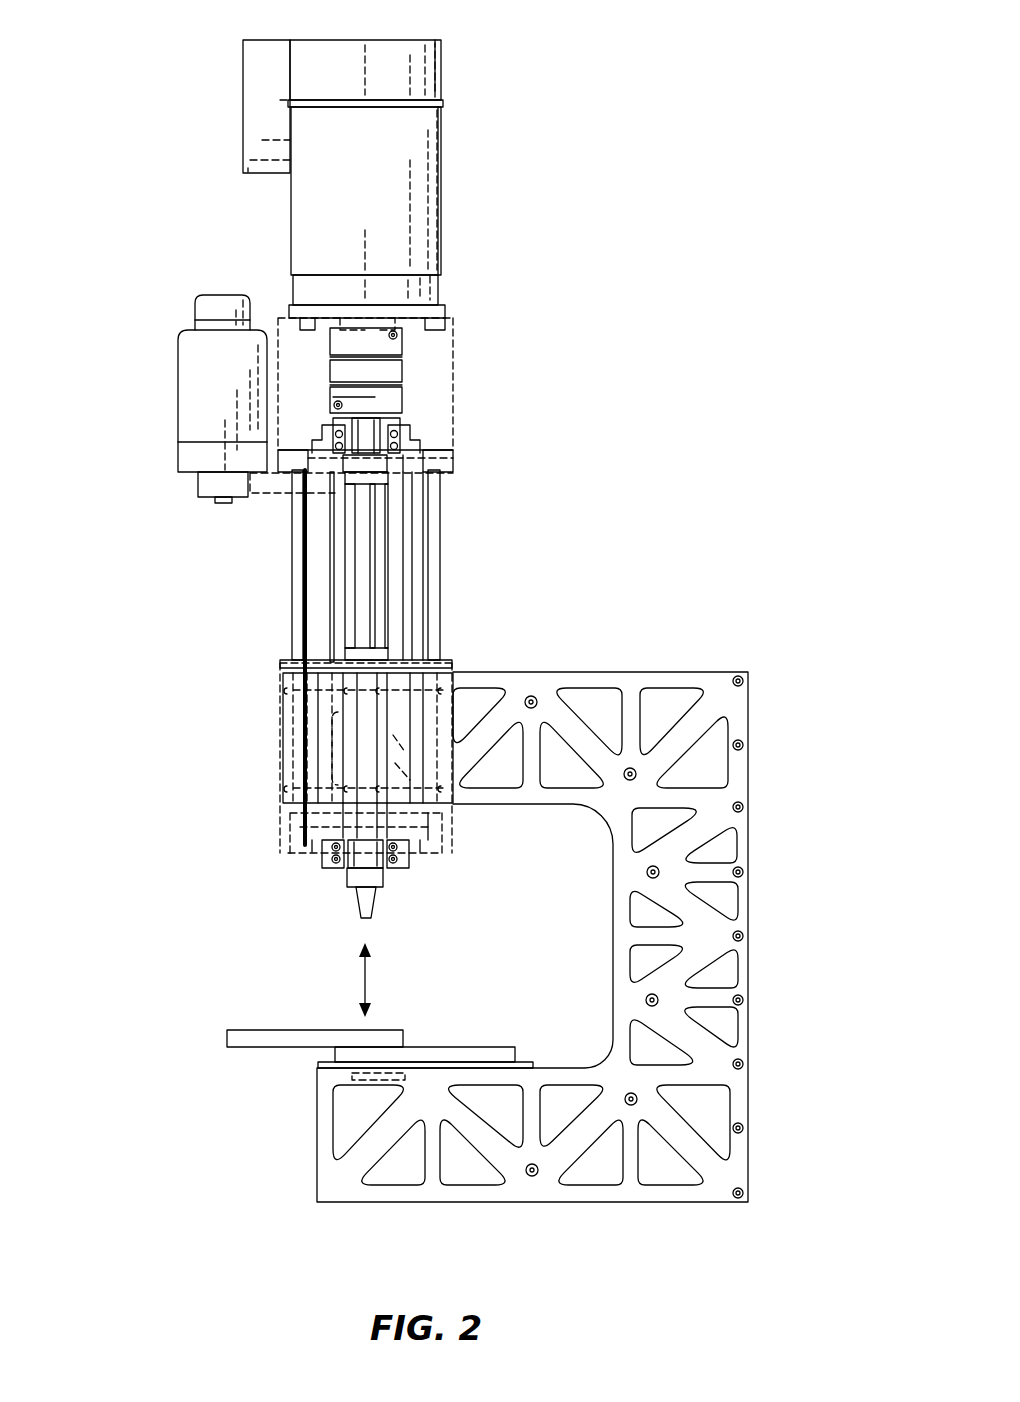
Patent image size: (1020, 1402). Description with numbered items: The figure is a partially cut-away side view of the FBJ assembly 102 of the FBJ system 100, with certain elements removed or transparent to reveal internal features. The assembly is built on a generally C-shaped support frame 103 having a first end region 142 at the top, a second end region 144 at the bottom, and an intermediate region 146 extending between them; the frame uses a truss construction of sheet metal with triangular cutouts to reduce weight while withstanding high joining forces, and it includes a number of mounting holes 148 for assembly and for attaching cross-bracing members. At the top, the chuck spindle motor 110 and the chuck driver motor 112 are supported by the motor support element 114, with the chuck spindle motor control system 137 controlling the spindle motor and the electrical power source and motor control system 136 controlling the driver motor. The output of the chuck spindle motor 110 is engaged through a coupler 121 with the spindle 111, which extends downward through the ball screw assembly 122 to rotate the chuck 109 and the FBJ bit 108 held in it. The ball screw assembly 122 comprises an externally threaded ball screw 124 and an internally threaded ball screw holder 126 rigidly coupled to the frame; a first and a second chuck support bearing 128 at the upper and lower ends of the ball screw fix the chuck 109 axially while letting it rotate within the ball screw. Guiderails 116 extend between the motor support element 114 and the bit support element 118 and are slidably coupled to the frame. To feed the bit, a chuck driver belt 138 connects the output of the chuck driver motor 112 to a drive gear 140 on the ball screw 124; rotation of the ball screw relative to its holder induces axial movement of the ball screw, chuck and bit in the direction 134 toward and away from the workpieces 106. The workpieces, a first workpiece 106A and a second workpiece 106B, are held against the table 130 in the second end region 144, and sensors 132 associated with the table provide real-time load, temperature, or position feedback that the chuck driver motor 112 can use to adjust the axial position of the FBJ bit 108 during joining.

The FBJ system 100 is at (108, 72).
The FBJ assembly 102 is at (518, 275).
The support frame 103 is at (750, 1085).
The workpieces 106 is at (455, 1002).
The first workpiece 106A is at (227, 1037).
The second workpiece 106B is at (505, 1047).
The FBJ bit 108 is at (370, 908).
The chuck 109 is at (353, 878).
The chuck spindle motor 110 is at (497, 184).
The spindle 111 is at (370, 582).
The chuck driver motor 112 is at (156, 388).
The motor support element 114 is at (455, 465).
The guiderails 116 is at (296, 610).
The bit support element 118 is at (290, 848).
The coupler 121 is at (402, 372).
The ball screw assembly 122 is at (188, 650).
The ball screw 124 is at (313, 632).
The ball screw holder 126 is at (302, 735).
The chuck support bearing 128 is at (430, 423).
The table 130 is at (318, 1065).
The sensors 132 is at (352, 1076).
The direction 134 is at (362, 984).
The motor control system 136 is at (225, 302).
The chuck spindle motor control system 137 is at (260, 117).
The chuck driver belt 138 is at (268, 492).
The drive gear 140 is at (412, 488).
The first end region 142 is at (640, 618).
The second end region 144 is at (532, 1220).
The intermediate region 146 is at (790, 948).
The mounting holes 148 is at (642, 772).